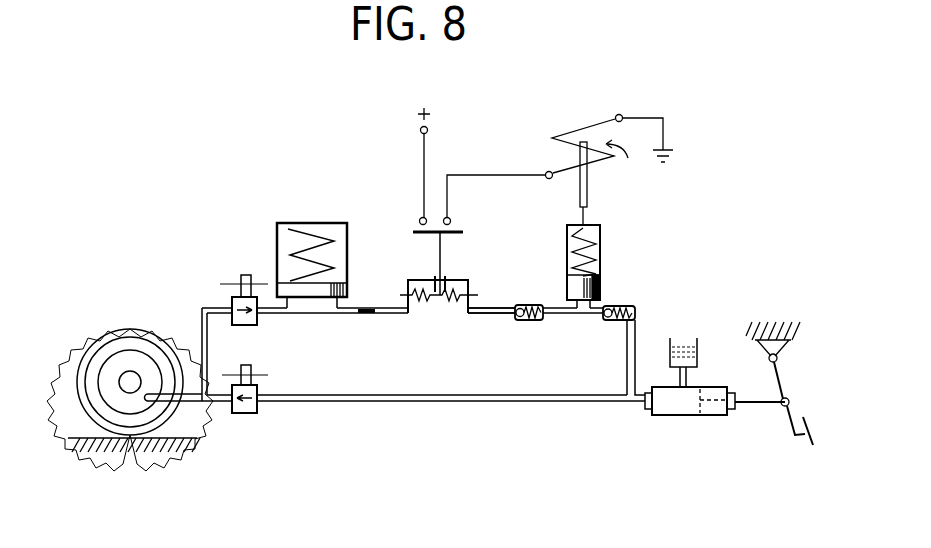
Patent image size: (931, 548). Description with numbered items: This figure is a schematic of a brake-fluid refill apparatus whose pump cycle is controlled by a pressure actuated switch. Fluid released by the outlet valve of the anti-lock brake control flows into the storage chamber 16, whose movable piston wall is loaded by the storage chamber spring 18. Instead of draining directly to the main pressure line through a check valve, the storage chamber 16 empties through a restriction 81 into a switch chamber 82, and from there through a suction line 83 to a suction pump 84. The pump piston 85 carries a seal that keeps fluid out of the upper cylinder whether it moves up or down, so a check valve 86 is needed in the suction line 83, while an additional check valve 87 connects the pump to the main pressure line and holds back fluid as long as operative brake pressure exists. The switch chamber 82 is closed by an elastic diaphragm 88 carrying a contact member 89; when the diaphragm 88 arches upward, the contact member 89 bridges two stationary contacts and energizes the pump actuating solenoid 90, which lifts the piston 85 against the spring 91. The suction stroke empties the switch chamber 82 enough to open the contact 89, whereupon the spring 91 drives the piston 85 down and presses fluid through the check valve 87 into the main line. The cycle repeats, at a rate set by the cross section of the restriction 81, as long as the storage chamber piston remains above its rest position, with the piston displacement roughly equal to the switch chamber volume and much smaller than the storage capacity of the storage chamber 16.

The storage chamber 16 is at (320, 309).
The storage chamber spring 18 is at (303, 231).
The restriction 81 is at (366, 313).
The switch chamber 82 is at (433, 314).
The suction line 83 is at (491, 330).
The suction pump 84 is at (613, 265).
The piston 85 is at (600, 291).
The check valve 86 is at (532, 330).
The check valve 87 is at (637, 315).
The elastic diaphragm 88 is at (460, 295).
The contact member 89 is at (446, 236).
The pump actuating solenoid 90 is at (610, 171).
The spring 91 is at (588, 245).